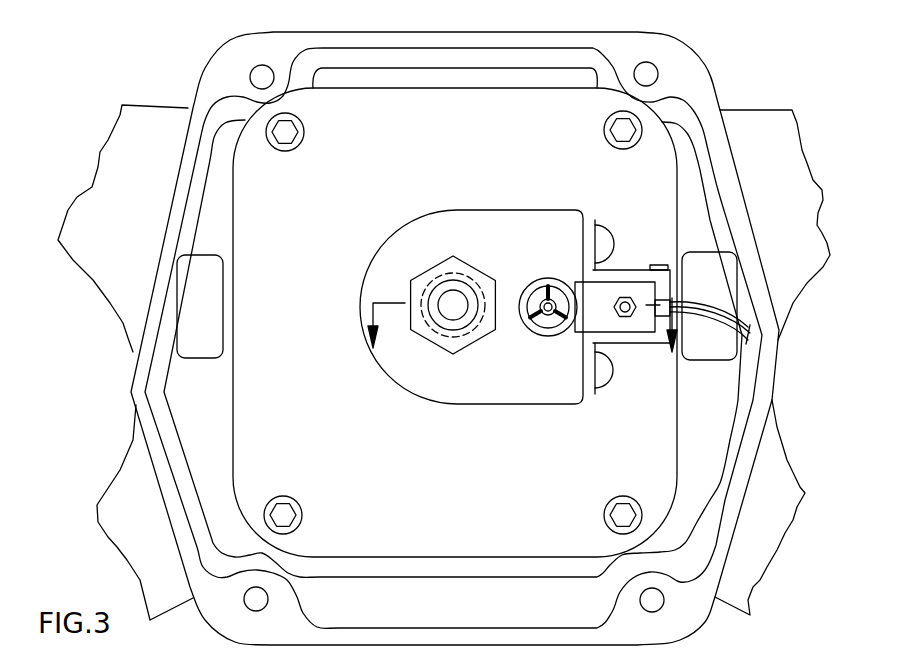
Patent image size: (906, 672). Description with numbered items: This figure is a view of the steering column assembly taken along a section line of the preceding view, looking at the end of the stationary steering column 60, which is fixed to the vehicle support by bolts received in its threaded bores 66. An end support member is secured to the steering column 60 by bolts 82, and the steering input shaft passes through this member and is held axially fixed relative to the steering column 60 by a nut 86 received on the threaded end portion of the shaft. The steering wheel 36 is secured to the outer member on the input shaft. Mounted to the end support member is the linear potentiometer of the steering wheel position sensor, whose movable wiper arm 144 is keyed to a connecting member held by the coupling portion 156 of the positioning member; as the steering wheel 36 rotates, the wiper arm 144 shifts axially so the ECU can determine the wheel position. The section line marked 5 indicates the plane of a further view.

The steering wheel 36 is at (762, 137).
The stationary steering column 60 is at (670, 52).
The threaded bores 66 is at (646, 72).
The bolts 82 is at (620, 133).
The nut 86 is at (428, 278).
The movable wiper arm 144 is at (626, 305).
The coupling portion 156 is at (547, 276).
The section line 5- 5 is at (522, 332).